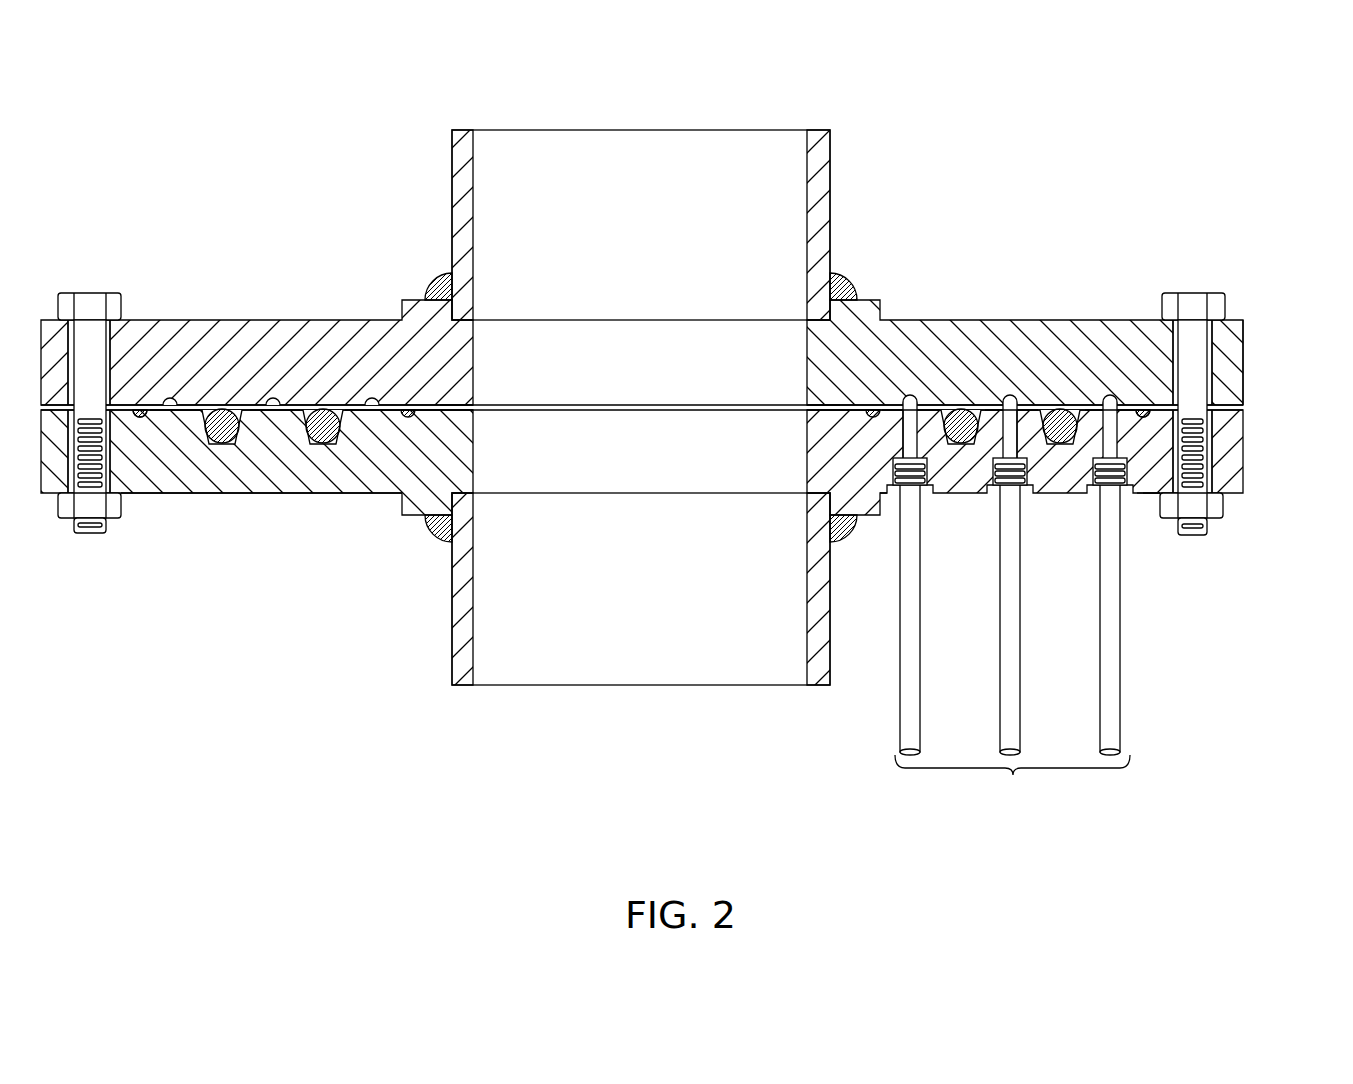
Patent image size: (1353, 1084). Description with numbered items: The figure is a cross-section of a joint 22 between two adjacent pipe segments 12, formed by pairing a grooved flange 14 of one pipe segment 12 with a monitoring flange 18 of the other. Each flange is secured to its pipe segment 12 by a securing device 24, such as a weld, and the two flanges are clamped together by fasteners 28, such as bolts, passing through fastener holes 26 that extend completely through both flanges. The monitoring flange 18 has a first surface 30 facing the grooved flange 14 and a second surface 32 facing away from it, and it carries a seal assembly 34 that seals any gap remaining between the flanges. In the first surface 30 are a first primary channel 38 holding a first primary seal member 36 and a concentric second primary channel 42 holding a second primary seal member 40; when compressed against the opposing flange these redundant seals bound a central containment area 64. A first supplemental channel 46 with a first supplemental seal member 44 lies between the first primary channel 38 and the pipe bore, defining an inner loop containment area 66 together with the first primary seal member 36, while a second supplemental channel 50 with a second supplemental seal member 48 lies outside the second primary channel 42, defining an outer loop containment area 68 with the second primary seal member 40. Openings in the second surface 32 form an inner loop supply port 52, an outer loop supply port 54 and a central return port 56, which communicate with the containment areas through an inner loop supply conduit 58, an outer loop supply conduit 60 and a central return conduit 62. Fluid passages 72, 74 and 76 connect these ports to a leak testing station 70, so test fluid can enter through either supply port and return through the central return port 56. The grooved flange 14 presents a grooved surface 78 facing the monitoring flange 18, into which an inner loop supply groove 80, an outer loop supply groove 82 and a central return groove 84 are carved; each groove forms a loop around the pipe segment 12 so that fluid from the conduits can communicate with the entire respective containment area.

The pipe segment 12 is at (618, 221).
The grooved flange 14 is at (296, 368).
The monitoring flange 18 is at (416, 483).
The joint 22 is at (1258, 382).
The securing device 24 is at (444, 278).
The fastener hole 26 is at (112, 355).
The fastener 28 is at (90, 308).
The first surface 30 is at (56, 400).
The second surface 32 is at (136, 496).
The seal assembly 34 is at (1197, 568).
The first primary seal member 36 is at (313, 435).
The first primary channel 38 is at (322, 446).
The second primary seal member 40 is at (212, 435).
The second primary channel 42 is at (222, 446).
The first supplemental seal member 44 is at (412, 390).
The first supplemental channel 46 is at (405, 447).
The second supplemental seal member 48 is at (141, 408).
The second supplemental channel 50 is at (171, 418).
The inner loop supply port 52 is at (928, 470).
The outer loop supply port 54 is at (1093, 472).
The central return port 56 is at (1028, 470).
The inner loop supply conduit 58 is at (903, 439).
The outer loop supply conduit 60 is at (1150, 452).
The central return conduit 62 is at (1015, 448).
The central containment area 64 is at (265, 418).
The inner loop containment area 66 is at (345, 418).
The outer loop containment area 68 is at (183, 422).
The leak testing station 70 is at (1012, 800).
The fluid passage 72 is at (922, 612).
The fluid passage 74 is at (1122, 612).
The fluid passage 76 is at (1022, 612).
The grooved surface 78 is at (448, 411).
The inner loop supply groove 80 is at (372, 398).
The outer loop supply groove 82 is at (172, 400).
The central return groove 84 is at (273, 398).